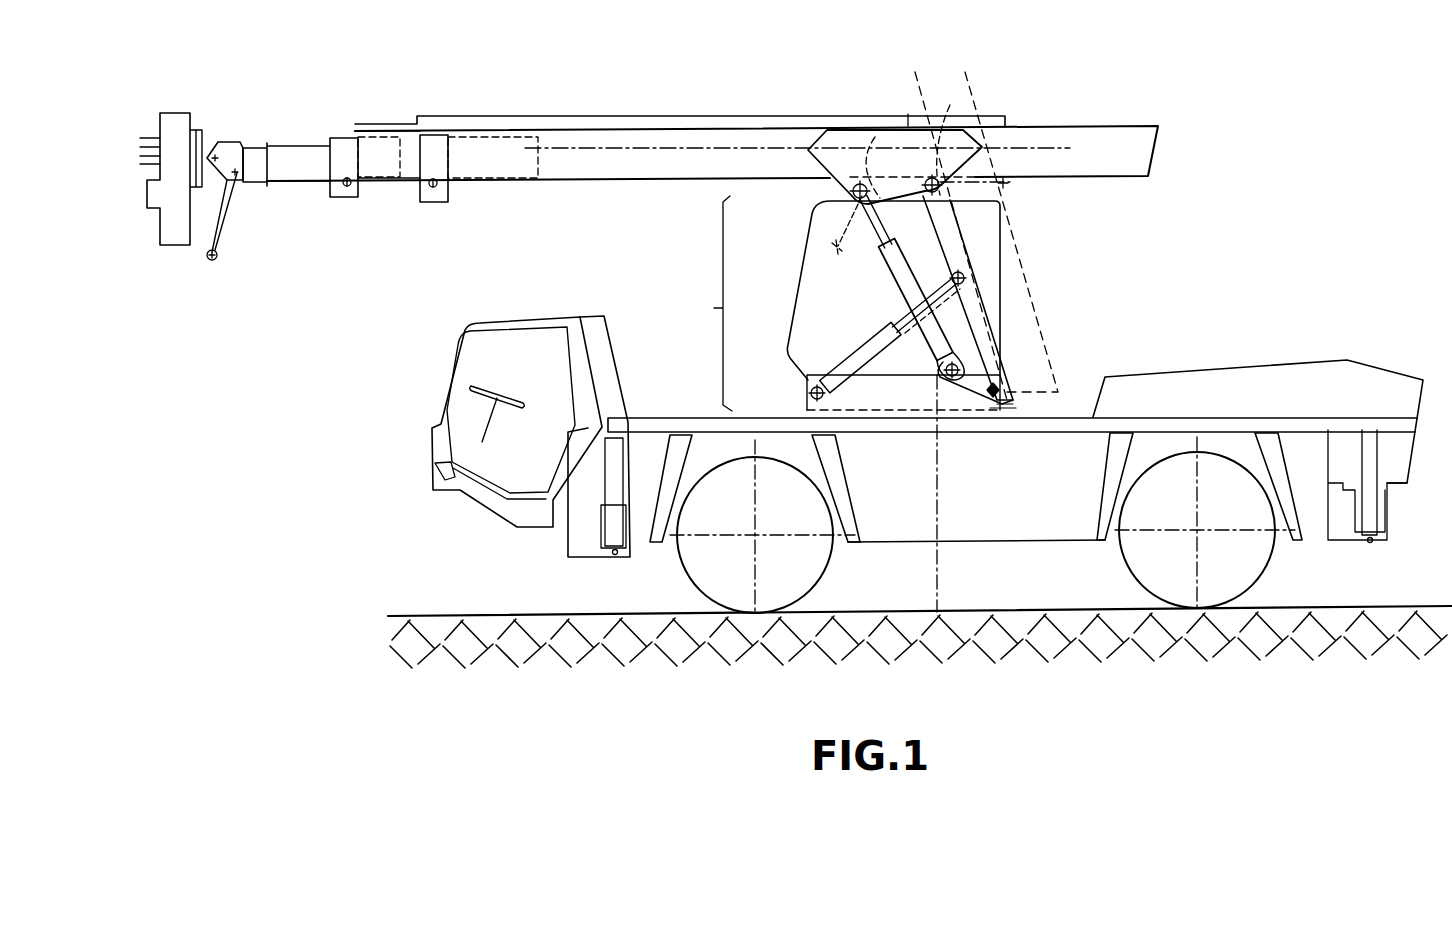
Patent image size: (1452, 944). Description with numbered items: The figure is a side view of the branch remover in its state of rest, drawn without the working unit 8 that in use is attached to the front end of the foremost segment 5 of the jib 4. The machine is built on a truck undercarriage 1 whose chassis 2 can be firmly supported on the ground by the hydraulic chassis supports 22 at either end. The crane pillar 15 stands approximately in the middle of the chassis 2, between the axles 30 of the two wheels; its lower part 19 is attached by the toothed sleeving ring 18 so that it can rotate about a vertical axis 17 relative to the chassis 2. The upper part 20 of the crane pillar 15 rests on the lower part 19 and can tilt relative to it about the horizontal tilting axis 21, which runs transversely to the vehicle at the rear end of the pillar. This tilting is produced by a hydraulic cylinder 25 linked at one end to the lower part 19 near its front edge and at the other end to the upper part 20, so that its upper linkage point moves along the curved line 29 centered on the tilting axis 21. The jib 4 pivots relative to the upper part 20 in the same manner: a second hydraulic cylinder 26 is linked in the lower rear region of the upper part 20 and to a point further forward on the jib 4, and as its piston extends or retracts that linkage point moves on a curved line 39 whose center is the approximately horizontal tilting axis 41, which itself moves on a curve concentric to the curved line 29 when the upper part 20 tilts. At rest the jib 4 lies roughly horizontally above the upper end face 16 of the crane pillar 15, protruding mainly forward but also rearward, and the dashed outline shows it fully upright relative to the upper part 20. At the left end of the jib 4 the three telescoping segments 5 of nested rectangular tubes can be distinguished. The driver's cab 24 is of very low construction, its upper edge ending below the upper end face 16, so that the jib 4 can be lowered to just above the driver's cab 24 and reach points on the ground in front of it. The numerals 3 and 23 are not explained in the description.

The truck undercarriage 1 is at (358, 510).
The chassis 2 is at (1005, 412).
The superstructure 3 is at (1113, 282).
The jib 4 is at (1196, 158).
The segments 5 is at (286, 157).
The working unit 8 is at (178, 113).
The crane pillar 15 is at (707, 303).
The upper end face 16 is at (850, 214).
The vertical axis 17 is at (937, 563).
The toothed sleeving ring 18 is at (808, 404).
The lower part 19 is at (897, 400).
The upper part 20 is at (811, 344).
The horizontal tilting axis 21 is at (999, 388).
The hydraulic chassis supports 22 is at (611, 530).
The boom base section 23 is at (1050, 146).
The driver's cab 24 is at (511, 369).
The hydraulic cylinder 25 is at (837, 370).
The second hydraulic cylinder 26 is at (890, 258).
The curved line 29 is at (976, 277).
The axles 30 is at (755, 535).
The curved line 39 is at (877, 140).
The tilting axis 41 is at (933, 178).